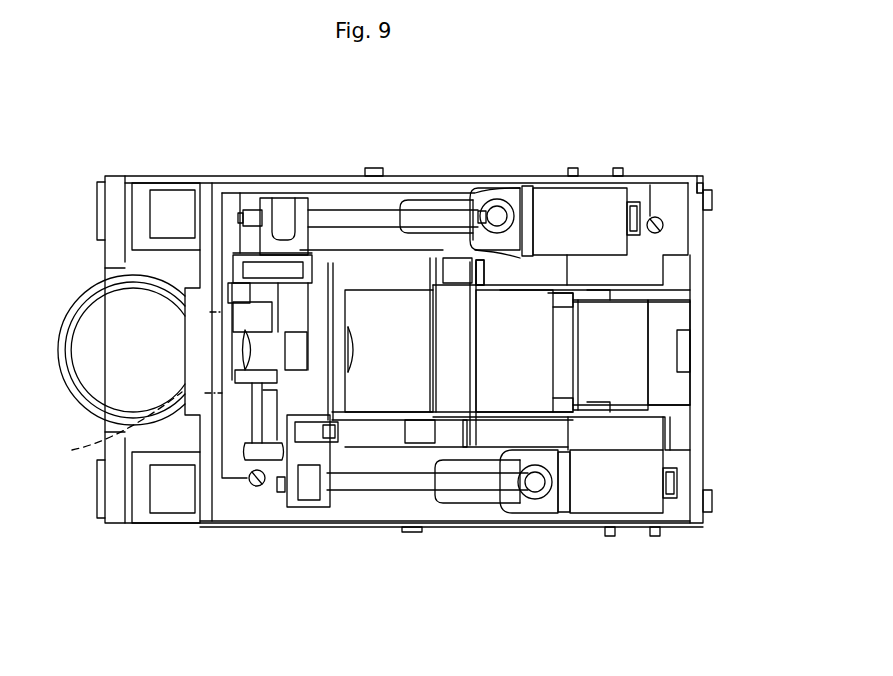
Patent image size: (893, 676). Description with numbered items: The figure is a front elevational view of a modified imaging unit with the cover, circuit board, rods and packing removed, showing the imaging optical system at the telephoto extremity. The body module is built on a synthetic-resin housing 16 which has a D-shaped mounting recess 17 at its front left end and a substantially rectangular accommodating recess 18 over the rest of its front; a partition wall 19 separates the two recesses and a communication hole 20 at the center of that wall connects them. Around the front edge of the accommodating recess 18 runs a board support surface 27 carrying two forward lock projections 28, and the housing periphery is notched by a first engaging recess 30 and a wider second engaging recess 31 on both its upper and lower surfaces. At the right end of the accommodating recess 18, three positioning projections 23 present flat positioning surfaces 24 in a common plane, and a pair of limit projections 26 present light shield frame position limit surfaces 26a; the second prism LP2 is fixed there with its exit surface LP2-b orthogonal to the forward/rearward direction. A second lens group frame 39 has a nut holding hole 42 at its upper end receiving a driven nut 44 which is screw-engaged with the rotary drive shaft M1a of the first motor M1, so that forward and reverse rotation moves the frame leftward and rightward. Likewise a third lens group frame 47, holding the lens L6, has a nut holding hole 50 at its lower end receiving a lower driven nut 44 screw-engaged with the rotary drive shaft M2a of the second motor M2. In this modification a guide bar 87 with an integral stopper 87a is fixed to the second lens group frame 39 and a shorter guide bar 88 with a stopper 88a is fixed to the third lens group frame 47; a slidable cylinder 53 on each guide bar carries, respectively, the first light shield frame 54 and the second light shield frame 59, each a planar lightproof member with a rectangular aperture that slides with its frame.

The housing 16 is at (667, 173).
The mounting recess 17 is at (80, 325).
The accommodating recess 18 is at (672, 510).
The partition wall 19 is at (217, 330).
The communication hole 20 is at (110, 428).
The positioning projections 23 is at (683, 352).
The positioning surfaces 24 is at (683, 351).
The limit projections 26 is at (552, 297).
The light shield frame position limit surfaces 26a is at (560, 296).
The board support surface 27 is at (690, 200).
The lock projections 28 is at (664, 224).
The first engaging recess 30 is at (447, 297).
The second engaging recess 31 is at (390, 176).
The second lens group frame 39 is at (314, 245).
The nut holding hole 42 is at (258, 212).
The driven nut 44 is at (288, 205).
The third lens group frame 47 is at (342, 310).
The nut holding hole 50 is at (300, 497).
The slidable cylinder 53 is at (482, 277).
The first light shield frame 54 is at (452, 268).
The second light shield frame 59 is at (433, 382).
The guide bar 87 is at (358, 273).
The stopper 87a is at (483, 268).
The guide bar 88 is at (375, 433).
The stopper 88a is at (493, 527).
The lens L6 is at (352, 347).
The second prism LP2 is at (635, 315).
The exit surface LP2-b is at (631, 353).
The first motor M1 is at (587, 193).
The rotary drive shaft M1a is at (512, 213).
The second motor M2 is at (612, 473).
The rotary drive shaft M2a is at (463, 485).